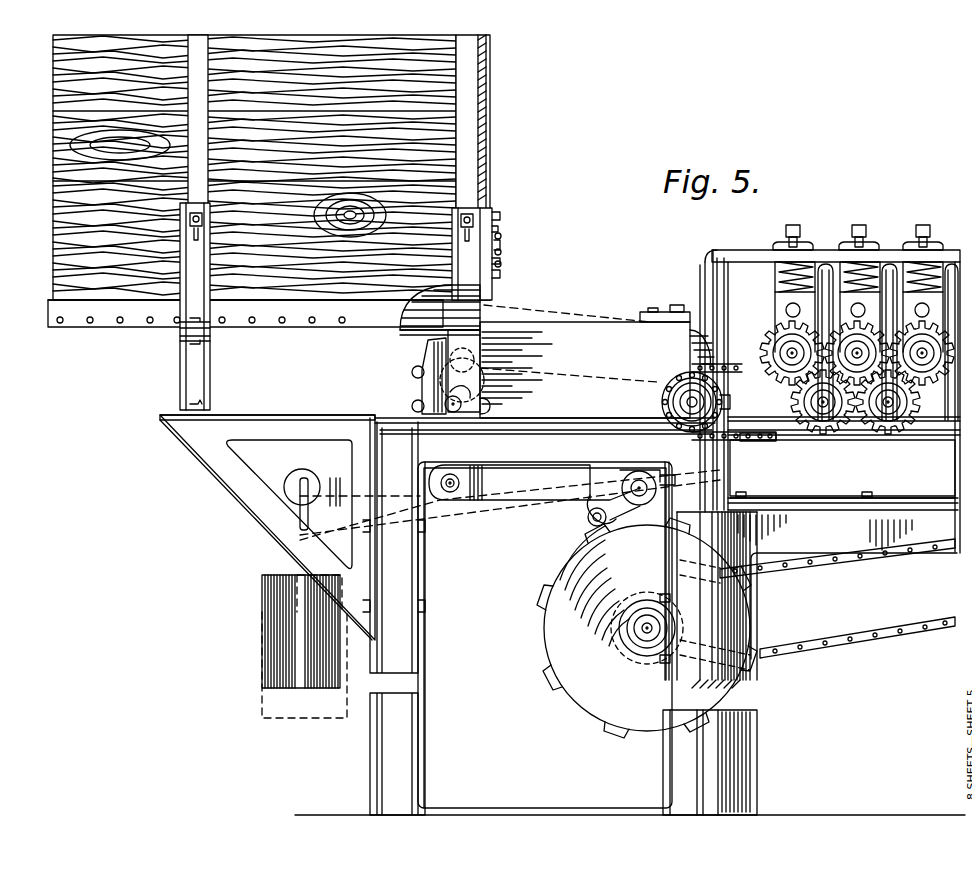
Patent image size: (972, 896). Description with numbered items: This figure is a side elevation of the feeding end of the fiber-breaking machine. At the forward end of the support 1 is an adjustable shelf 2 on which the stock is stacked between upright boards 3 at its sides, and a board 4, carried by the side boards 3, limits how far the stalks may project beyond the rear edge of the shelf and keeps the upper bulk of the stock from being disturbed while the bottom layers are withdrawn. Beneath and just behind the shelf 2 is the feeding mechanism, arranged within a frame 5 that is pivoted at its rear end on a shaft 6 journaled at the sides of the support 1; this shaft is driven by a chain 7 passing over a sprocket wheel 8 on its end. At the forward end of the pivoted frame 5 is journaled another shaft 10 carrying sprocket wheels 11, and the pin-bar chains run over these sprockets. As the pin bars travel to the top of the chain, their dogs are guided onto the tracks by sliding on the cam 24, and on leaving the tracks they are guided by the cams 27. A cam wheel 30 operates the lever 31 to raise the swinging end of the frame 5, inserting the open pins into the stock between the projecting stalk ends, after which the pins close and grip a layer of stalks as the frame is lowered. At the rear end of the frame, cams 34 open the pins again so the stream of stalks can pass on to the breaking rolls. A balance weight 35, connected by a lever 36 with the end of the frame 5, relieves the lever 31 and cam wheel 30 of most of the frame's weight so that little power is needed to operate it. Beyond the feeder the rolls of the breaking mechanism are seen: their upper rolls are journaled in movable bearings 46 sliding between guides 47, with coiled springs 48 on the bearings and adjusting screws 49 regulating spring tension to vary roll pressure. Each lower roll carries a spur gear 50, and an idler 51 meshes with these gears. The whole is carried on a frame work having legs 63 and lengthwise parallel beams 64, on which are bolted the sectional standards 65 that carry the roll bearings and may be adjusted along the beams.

The support 1 is at (536, 426).
The adjustable shelf 2 is at (110, 328).
The upright boards 3 is at (53, 204).
The board 4 is at (490, 200).
The pivoted frame 5 is at (585, 361).
The shaft 6 is at (690, 401).
The chain 7 is at (748, 440).
The sprocket wheel 8 is at (666, 428).
The shaft 10 is at (444, 402).
The sprocket wheels 11 is at (490, 402).
The cam 24 is at (426, 362).
The cams 27 is at (703, 330).
The cam wheel 30 is at (564, 608).
The lever 31 is at (528, 490).
The cams 34 is at (662, 314).
The balance weight 35 is at (268, 597).
The lever 36 is at (305, 470).
The movable bearings 46 is at (778, 308).
The guides 47 is at (824, 264).
The coiled springs 48 is at (909, 270).
The adjusting screws 49 is at (926, 232).
The spur gear 50 is at (775, 330).
The idler 51 is at (818, 430).
The legs 63 is at (745, 750).
The parallel beams 64 is at (842, 495).
The standards 65 is at (836, 454).